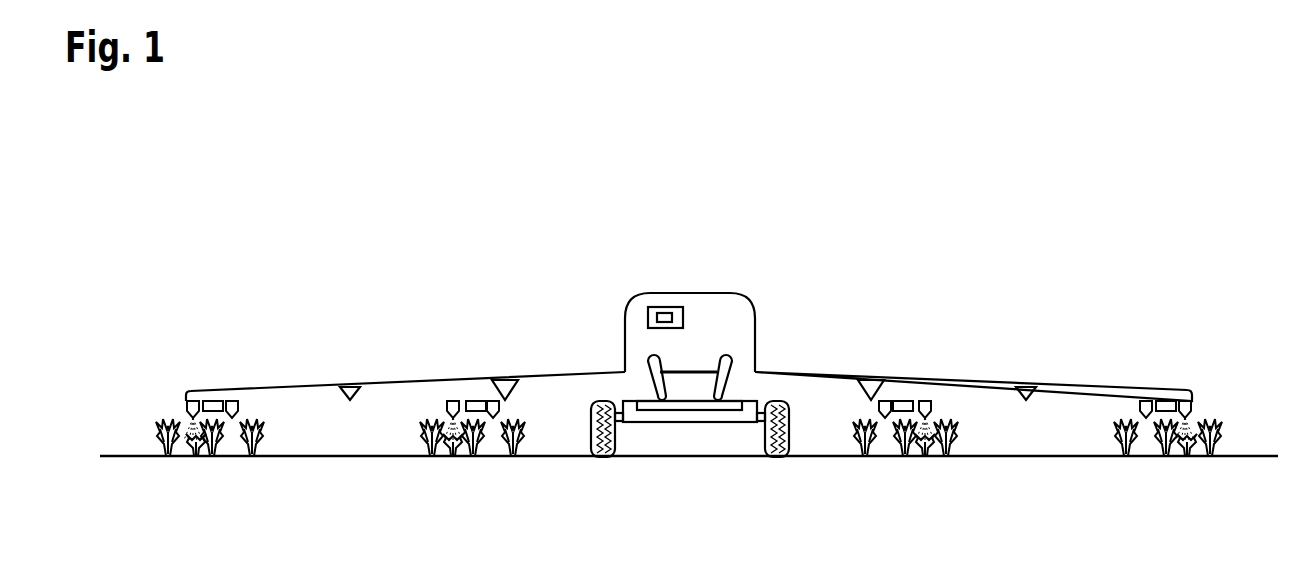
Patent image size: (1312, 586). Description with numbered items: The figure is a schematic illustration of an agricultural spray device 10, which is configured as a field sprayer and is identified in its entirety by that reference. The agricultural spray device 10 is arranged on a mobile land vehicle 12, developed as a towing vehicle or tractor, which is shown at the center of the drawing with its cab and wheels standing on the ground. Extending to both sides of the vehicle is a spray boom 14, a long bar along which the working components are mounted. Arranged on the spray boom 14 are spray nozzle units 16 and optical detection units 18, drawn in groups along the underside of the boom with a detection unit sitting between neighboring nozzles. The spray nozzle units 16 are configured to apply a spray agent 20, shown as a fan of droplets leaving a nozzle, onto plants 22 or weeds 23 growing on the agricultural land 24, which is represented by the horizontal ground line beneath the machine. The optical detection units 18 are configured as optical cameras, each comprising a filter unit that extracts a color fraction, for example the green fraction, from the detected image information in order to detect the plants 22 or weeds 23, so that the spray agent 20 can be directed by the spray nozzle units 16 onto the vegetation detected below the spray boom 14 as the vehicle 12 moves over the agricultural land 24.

The agricultural spray device 10 is at (1032, 307).
The mobile land vehicle 12 is at (713, 293).
The spray boom 14 is at (420, 381).
The spray nozzle unit 16 is at (1194, 405).
The optical detection unit 18 is at (1164, 401).
The spray agent 20 is at (1196, 415).
The plant 22 is at (1221, 430).
The weed 23 is at (1188, 458).
The agricultural land 24 is at (1024, 458).